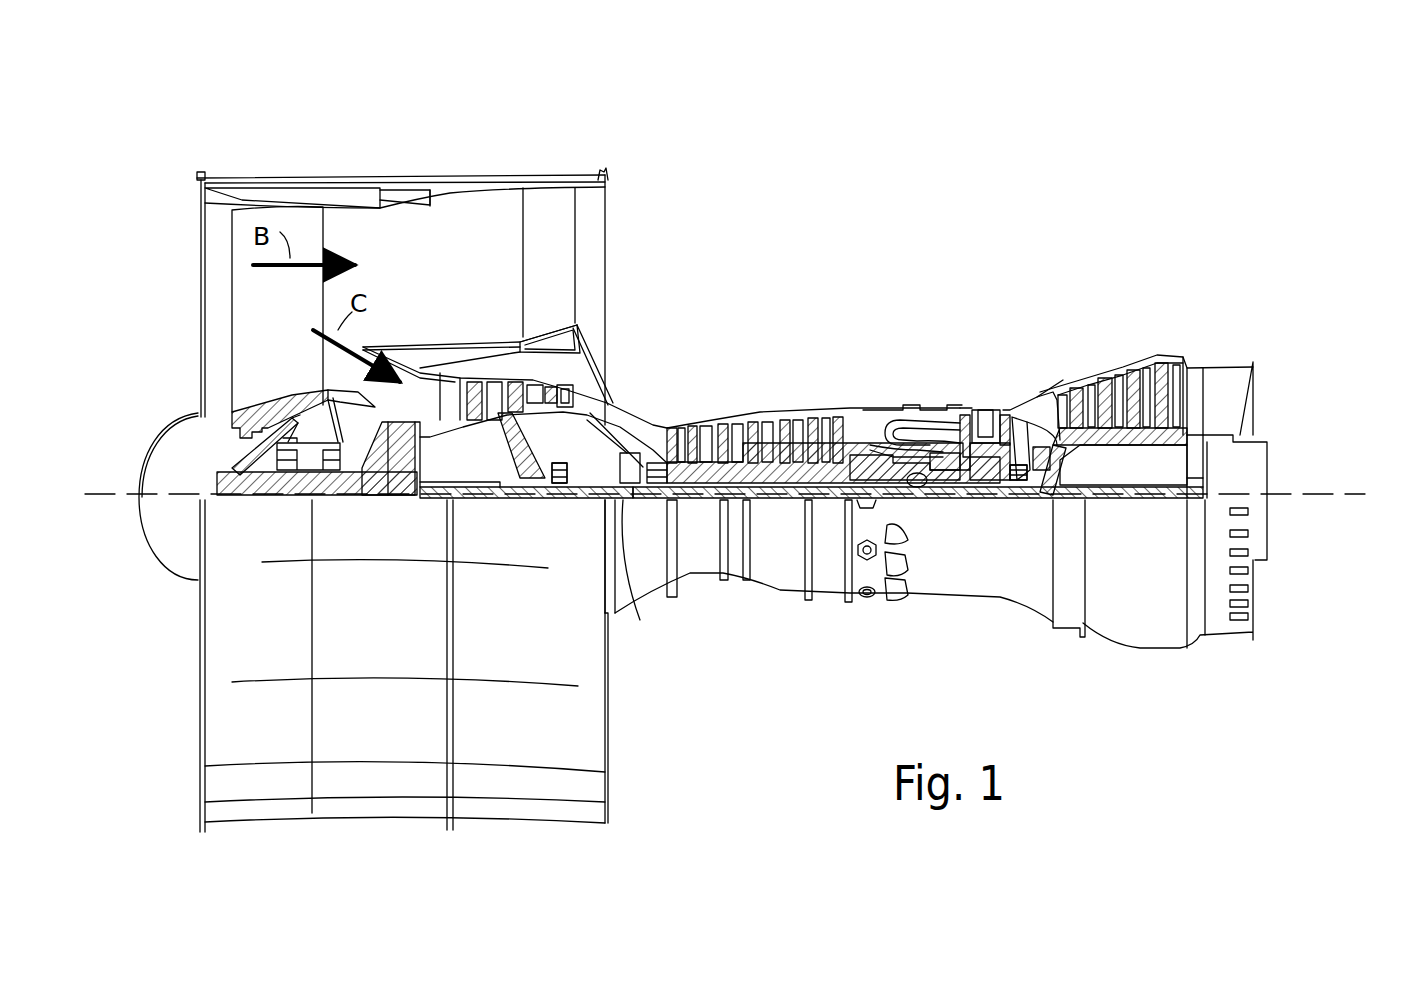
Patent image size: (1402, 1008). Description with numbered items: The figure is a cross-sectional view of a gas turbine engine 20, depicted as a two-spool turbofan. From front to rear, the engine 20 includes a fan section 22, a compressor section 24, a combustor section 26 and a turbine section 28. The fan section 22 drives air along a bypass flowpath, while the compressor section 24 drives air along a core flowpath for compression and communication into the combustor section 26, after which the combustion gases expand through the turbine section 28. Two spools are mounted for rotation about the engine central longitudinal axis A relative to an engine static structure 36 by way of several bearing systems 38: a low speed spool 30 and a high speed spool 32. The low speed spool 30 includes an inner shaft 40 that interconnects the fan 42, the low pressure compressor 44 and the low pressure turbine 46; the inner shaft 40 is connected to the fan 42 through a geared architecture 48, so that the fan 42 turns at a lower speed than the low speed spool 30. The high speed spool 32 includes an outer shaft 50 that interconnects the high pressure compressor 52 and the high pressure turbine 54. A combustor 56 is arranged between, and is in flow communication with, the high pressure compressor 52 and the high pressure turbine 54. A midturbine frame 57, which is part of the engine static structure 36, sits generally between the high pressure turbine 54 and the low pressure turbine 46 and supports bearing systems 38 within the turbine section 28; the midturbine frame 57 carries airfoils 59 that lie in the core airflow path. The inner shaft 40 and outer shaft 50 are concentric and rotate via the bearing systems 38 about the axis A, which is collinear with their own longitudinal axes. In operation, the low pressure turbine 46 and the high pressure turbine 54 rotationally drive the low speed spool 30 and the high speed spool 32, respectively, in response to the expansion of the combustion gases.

The engine 20 is at (917, 235).
The fan section 22 is at (322, 172).
The compressor section 24 is at (666, 378).
The combustor section 26 is at (909, 352).
The turbine section 28 is at (1080, 338).
The low speed spool 30 is at (780, 505).
The high speed spool 32 is at (830, 420).
The engine static structure 36 is at (828, 592).
The bearing systems 38 is at (557, 484).
The inner shaft 40 is at (640, 620).
The fan 42 is at (285, 316).
The low pressure compressor 44 is at (533, 385).
The low pressure turbine 46 is at (1125, 362).
The geared architecture 48 is at (410, 482).
The outer shaft 50 is at (917, 486).
The high pressure compressor 52 is at (755, 460).
The high pressure turbine 54 is at (985, 410).
The combustor 56 is at (912, 430).
The midturbine frame 57 is at (1030, 402).
The airfoils 59 is at (1030, 425).
The engine central longitudinal axis A is at (1358, 494).